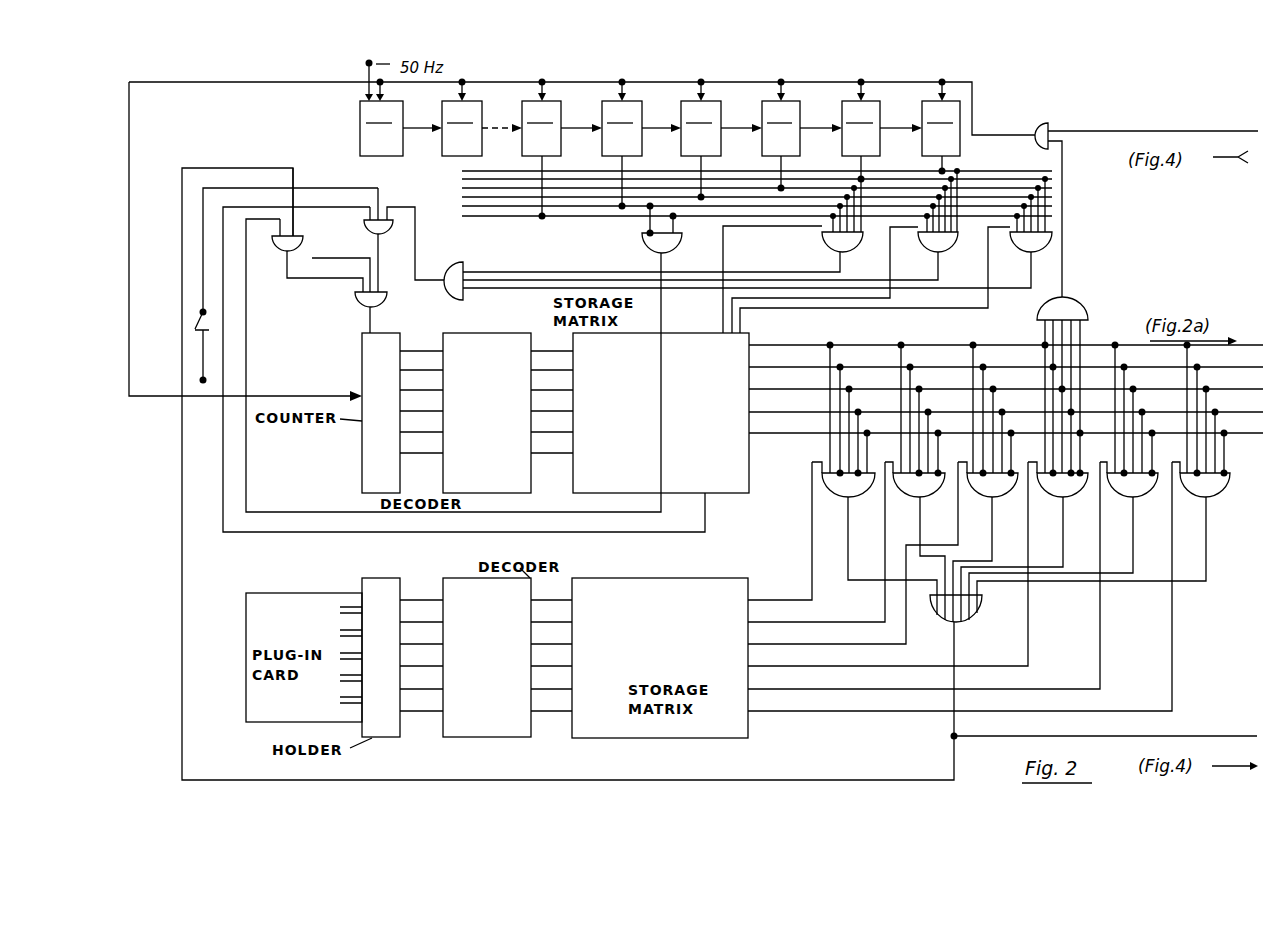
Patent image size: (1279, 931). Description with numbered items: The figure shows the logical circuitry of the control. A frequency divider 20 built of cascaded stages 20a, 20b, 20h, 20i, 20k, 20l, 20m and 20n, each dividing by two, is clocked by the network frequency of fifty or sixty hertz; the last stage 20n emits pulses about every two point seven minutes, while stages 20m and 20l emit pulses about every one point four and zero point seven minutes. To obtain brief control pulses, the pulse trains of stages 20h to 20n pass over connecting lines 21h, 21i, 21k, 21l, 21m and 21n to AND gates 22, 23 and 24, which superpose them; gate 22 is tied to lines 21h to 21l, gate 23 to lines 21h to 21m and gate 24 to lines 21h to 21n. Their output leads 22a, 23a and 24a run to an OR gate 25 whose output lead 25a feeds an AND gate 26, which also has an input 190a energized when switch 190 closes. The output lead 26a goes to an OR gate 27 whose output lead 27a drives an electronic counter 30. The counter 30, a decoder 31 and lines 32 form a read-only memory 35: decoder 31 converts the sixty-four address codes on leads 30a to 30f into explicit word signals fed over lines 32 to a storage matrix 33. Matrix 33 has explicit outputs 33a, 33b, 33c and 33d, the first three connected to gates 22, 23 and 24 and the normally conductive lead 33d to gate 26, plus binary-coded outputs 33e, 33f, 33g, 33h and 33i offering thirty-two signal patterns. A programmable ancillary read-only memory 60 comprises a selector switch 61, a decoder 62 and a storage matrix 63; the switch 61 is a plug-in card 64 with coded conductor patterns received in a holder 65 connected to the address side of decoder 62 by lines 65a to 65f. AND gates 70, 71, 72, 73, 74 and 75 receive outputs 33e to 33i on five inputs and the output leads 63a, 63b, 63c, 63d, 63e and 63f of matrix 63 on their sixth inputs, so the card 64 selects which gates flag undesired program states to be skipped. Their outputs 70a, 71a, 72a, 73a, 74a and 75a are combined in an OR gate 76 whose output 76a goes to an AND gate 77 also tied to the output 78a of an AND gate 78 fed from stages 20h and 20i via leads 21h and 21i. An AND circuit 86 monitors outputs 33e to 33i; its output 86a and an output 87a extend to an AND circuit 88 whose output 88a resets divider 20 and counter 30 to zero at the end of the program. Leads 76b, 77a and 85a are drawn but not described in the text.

The frequency divider 20 is at (757, 97).
The divider stage 20a is at (401, 128).
The divider stage 20b is at (482, 118).
The divider stage 20h is at (562, 118).
The divider stage 20i is at (641, 118).
The divider stage 20k is at (721, 118).
The divider stage 20l is at (802, 118).
The divider stage 20m is at (882, 118).
The divider stage 20n is at (941, 118).
The connecting line 21h is at (560, 212).
The connecting line 21i is at (640, 202).
The connecting line 21k is at (718, 194).
The connecting line 21l is at (798, 186).
The connecting line 21m is at (880, 178).
The connecting line 21n is at (990, 178).
The AND gate 22 is at (1036, 255).
The output lead 22a is at (508, 288).
The AND gate 23 is at (830, 250).
The output lead 23a is at (700, 272).
The AND gate 24 is at (950, 255).
The output lead 24a is at (568, 280).
The OR gate 25 is at (465, 266).
The output lead 25a is at (417, 215).
The AND gate 26 is at (384, 221).
The output lead 26a is at (379, 276).
The OR gate 27 is at (356, 300).
The output lead 27a is at (380, 325).
The electronic counter 30 is at (362, 433).
The lead 30a is at (421, 343).
The lead 30f is at (421, 424).
The decoder 31 is at (481, 340).
The lines 32 is at (546, 348).
The storage matrix 33 is at (624, 366).
The explicit output 33a is at (742, 321).
The explicit output 33b is at (728, 340).
The explicit output 33c is at (740, 340).
The explicit output lead 33d is at (282, 207).
The output 33e is at (820, 346).
The output 33f is at (820, 368).
The output 33g is at (820, 390).
The output 33h is at (820, 413).
The output 33i is at (820, 434).
The read-only memory 35 is at (596, 430).
The programmable ancillary read-only memory 60 is at (555, 662).
The selector switch 61 is at (354, 580).
The decoder 62 is at (493, 659).
The storage matrix 63 is at (665, 659).
The output lead 63a is at (800, 598).
The output lead 63b is at (858, 622).
The output lead 63c is at (822, 645).
The output lead 63d is at (900, 667).
The output lead 63e is at (833, 689).
The output lead 63f is at (915, 712).
The plug-in card 64 is at (282, 612).
The holder 65 is at (381, 600).
The line 65a is at (424, 598).
The line 65f is at (427, 732).
The AND gate 70 is at (851, 498).
The AND gate 71 is at (923, 498).
The AND gate 72 is at (993, 498).
The AND gate 73 is at (1063, 498).
The AND gate 74 is at (1133, 498).
The AND gate 75 is at (1220, 498).
The output 70a is at (849, 530).
The output 71a is at (921, 530).
The output 72a is at (993, 530).
The output 73a is at (1064, 530).
The output 74a is at (1134, 530).
The output 75a is at (1210, 528).
The OR gate 76 is at (981, 616).
The output 76a is at (956, 648).
The OR gate output line 76b is at (1245, 736).
The AND gate 77 is at (306, 243).
The gate output line 77a is at (320, 280).
The AND gate 78 is at (641, 243).
The output 78a is at (663, 322).
The input line 85a is at (341, 264).
The AND circuit 86 is at (1090, 313).
The output 86a is at (1064, 263).
The output 87a is at (1180, 132).
The AND circuit 88 is at (1046, 124).
The output 88a is at (602, 82).
The switch 190 is at (197, 312).
The input 190a is at (373, 188).